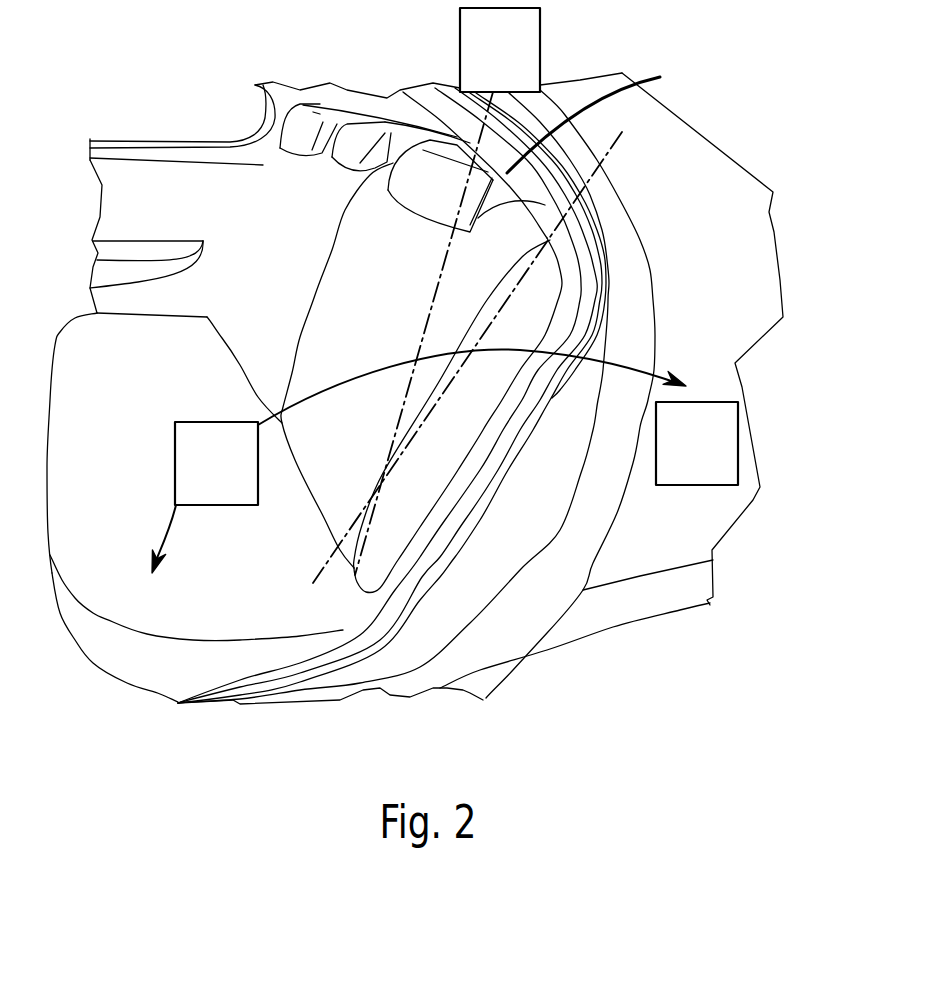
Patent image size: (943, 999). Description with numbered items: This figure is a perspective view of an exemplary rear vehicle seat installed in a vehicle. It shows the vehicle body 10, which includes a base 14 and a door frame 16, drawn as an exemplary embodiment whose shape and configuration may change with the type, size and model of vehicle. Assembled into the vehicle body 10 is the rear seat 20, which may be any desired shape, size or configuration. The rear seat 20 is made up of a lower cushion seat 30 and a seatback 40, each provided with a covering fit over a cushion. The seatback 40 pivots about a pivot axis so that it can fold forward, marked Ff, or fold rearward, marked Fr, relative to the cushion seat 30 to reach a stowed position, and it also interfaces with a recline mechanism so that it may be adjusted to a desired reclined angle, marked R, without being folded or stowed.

The vehicle body 10 is at (284, 228).
The base 14 is at (270, 692).
The door frame 16 is at (598, 118).
The rear seat 20 is at (158, 600).
The lower cushion seat 30 is at (195, 597).
The seatback 40 is at (350, 310).